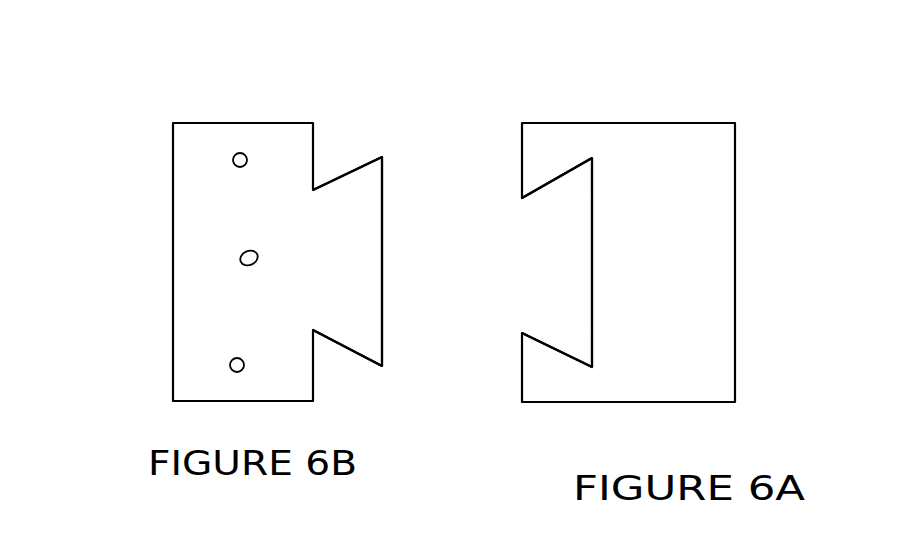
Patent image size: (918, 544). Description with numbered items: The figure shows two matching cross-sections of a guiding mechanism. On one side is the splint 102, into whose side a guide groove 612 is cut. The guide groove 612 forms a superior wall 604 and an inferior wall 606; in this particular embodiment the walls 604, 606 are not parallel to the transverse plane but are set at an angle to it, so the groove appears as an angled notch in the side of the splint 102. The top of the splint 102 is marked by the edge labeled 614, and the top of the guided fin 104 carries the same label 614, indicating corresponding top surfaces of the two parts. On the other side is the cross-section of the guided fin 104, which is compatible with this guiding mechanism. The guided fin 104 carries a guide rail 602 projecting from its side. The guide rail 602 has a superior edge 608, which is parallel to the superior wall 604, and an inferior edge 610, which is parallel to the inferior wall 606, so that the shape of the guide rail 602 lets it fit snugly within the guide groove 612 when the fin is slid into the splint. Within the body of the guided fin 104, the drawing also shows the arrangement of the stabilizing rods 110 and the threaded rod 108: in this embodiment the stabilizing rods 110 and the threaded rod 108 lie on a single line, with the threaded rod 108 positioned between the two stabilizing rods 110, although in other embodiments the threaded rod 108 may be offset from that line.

In FIG. 6A, the splint 102 is at (708, 217).
In FIG. 6B, the guided fin 104 is at (170, 161).
In FIG. 6B, the threaded rod 108 is at (242, 268).
In FIG. 6B, the stabilizing rods 110 is at (244, 148).
In FIG. 6B, the guide rail 602 is at (383, 220).
In FIG. 6A, the superior wall 604 is at (558, 175).
In FIG. 6A, the inferior wall 606 is at (567, 355).
In FIG. 6B, the superior edge 608 is at (361, 165).
In FIG. 6B, the inferior edge 610 is at (363, 358).
In FIG. 6A, the guide groove 612 is at (553, 250).
In FIG. 6B, the top edge 614 is at (205, 125).
In FIG. 6A, the top edge 614 is at (678, 122).